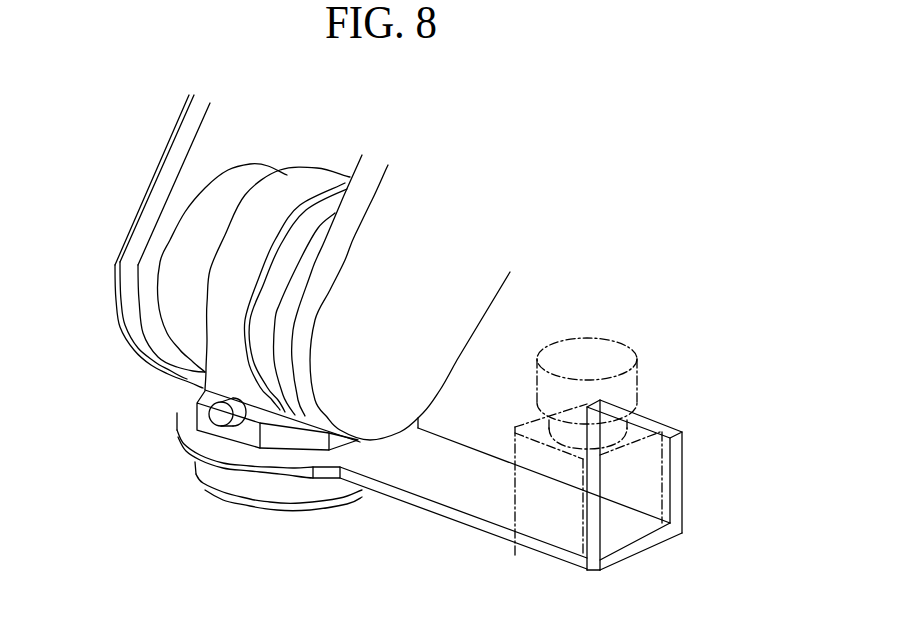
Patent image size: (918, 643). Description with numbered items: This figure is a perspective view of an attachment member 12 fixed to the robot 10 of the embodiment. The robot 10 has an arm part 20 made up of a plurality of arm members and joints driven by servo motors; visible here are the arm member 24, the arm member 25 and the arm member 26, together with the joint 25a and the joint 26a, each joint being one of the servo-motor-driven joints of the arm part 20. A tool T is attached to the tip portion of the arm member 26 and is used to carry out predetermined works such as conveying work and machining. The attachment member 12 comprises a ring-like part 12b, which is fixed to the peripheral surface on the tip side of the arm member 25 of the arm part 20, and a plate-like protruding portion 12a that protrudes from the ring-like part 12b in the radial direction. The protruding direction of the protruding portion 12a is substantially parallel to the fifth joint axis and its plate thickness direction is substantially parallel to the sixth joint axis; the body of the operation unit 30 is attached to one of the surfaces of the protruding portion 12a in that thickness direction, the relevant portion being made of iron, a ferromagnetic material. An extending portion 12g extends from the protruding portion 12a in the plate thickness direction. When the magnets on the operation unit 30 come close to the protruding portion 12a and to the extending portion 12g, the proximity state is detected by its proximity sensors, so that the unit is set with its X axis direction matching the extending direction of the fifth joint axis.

The robot 10 is at (441, 137).
The attachment member 12 is at (433, 517).
The protruding portion 12a is at (482, 535).
The ring-like part 12b is at (175, 422).
The extending portion 12g is at (683, 463).
The arm part 20 is at (497, 293).
The arm member 24 is at (187, 108).
The arm member 25 is at (175, 298).
The joint 25a is at (197, 193).
The arm member 26 is at (253, 500).
The joint 26a is at (198, 467).
The operation unit 30 is at (648, 363).
The tool T is at (287, 513).